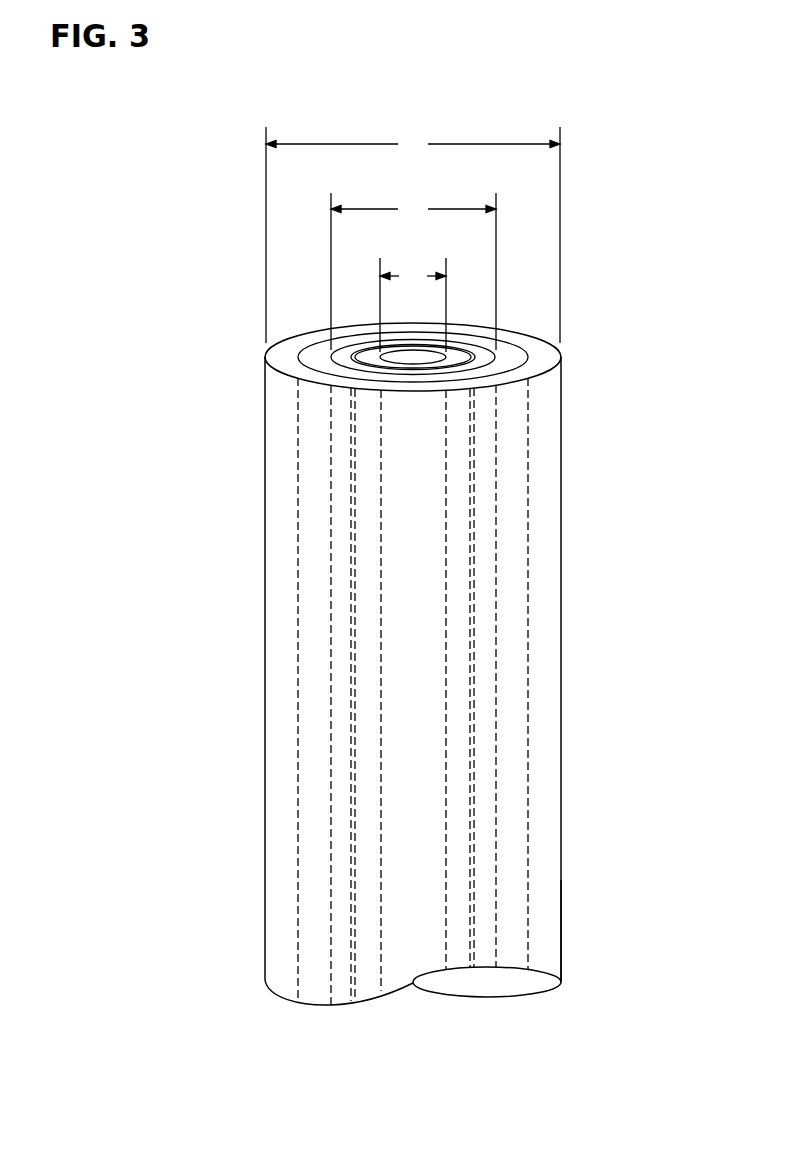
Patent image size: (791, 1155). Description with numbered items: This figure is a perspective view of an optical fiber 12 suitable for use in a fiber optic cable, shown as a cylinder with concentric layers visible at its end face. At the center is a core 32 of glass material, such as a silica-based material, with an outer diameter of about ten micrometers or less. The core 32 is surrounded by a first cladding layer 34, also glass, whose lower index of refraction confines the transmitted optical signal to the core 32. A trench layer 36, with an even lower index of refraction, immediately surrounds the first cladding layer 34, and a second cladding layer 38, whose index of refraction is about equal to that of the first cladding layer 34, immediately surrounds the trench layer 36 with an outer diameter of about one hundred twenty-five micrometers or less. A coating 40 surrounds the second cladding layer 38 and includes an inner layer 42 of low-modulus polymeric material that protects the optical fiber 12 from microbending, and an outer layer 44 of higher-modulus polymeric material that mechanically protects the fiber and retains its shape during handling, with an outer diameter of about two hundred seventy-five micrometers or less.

The optical fiber 12 is at (208, 377).
The core 32 is at (446, 470).
The first cladding layer 34 is at (469, 595).
The trench layer 36 is at (352, 785).
The second cladding layer 38 is at (332, 710).
The coating 40 is at (563, 797).
The inner layer 42 is at (528, 732).
The outer layer 44 is at (562, 907).